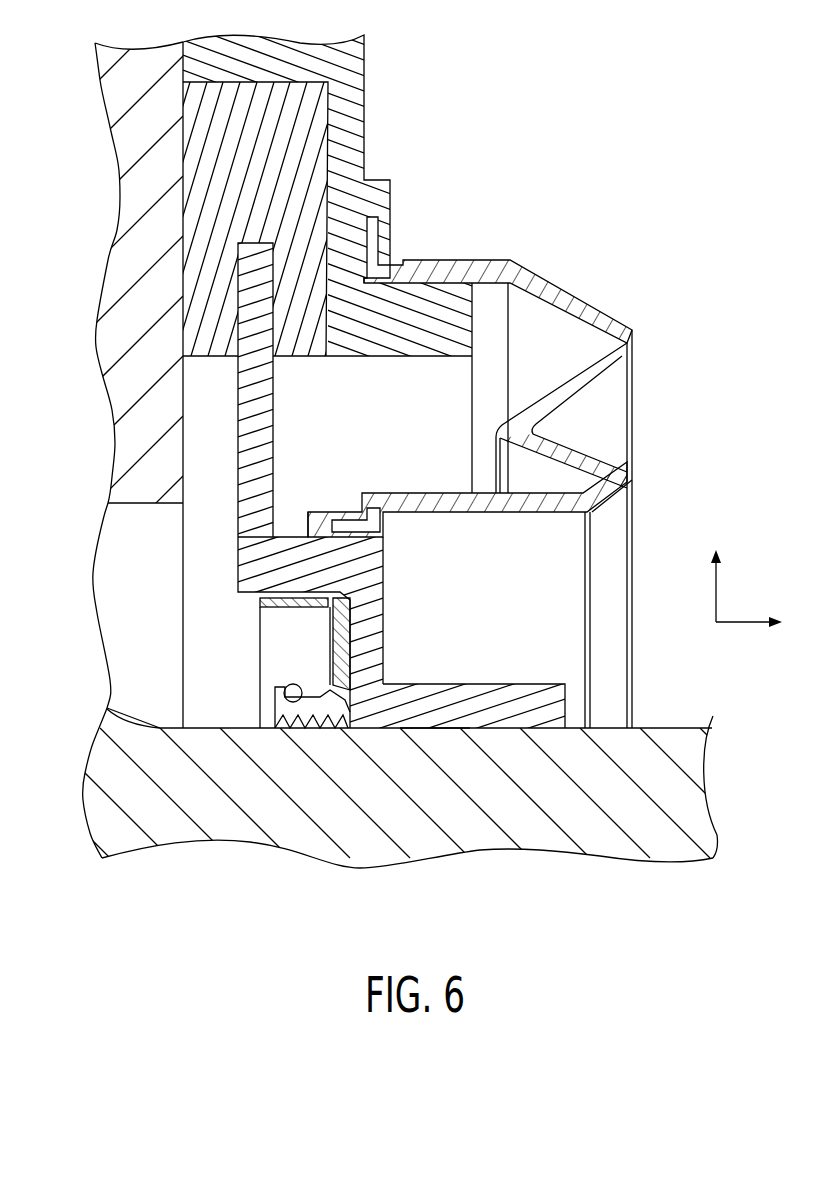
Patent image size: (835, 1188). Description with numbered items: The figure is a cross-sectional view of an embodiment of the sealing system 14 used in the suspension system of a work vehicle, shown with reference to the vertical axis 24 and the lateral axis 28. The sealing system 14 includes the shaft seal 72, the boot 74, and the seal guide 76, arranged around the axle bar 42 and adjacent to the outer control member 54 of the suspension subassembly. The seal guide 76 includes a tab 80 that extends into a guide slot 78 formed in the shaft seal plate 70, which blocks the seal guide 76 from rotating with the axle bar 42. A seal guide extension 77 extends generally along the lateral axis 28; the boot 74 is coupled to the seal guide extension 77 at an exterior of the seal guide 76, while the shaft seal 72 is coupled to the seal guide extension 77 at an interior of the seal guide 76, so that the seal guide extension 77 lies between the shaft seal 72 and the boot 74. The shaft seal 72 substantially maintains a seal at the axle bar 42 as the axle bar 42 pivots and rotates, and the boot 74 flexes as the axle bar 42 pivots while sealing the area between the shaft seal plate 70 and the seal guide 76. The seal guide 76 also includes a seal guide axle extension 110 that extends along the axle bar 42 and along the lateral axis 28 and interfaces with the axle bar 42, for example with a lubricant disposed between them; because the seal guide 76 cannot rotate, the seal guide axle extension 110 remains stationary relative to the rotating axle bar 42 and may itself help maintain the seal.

The sealing system 14 is at (649, 406).
The vertical axis 24 is at (716, 592).
The lateral axis 28 is at (744, 624).
The axle bar 42 is at (680, 728).
The outer control member 54 is at (118, 102).
The shaft seal plate 70 is at (364, 86).
The shaft seal 72 is at (290, 641).
The boot 74 is at (560, 293).
The seal guide 76 is at (496, 739).
The seal guide extension 77 is at (238, 545).
The guide slot 78 is at (327, 133).
The tab 80 is at (273, 283).
The seal guide axle extension 110 is at (432, 732).